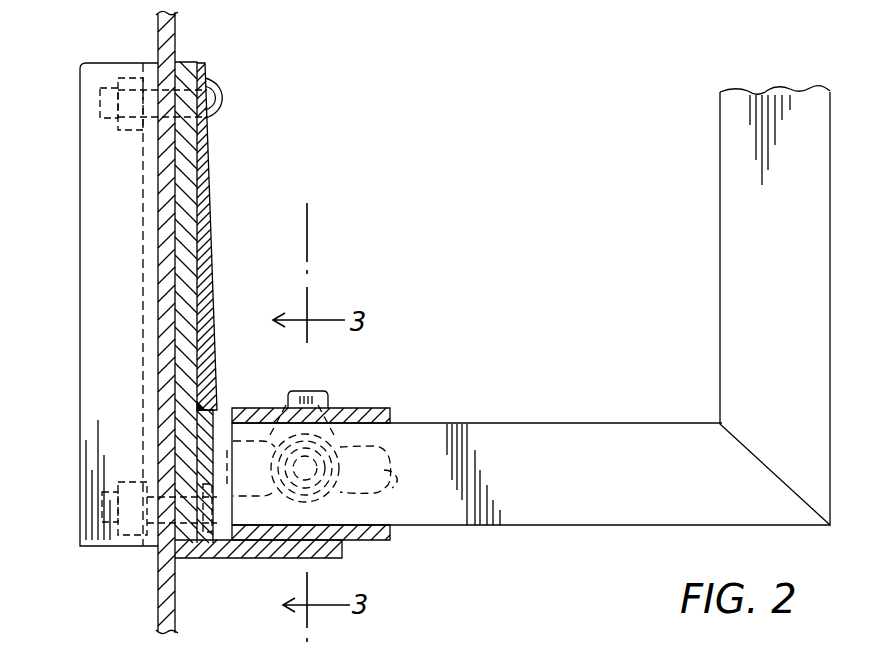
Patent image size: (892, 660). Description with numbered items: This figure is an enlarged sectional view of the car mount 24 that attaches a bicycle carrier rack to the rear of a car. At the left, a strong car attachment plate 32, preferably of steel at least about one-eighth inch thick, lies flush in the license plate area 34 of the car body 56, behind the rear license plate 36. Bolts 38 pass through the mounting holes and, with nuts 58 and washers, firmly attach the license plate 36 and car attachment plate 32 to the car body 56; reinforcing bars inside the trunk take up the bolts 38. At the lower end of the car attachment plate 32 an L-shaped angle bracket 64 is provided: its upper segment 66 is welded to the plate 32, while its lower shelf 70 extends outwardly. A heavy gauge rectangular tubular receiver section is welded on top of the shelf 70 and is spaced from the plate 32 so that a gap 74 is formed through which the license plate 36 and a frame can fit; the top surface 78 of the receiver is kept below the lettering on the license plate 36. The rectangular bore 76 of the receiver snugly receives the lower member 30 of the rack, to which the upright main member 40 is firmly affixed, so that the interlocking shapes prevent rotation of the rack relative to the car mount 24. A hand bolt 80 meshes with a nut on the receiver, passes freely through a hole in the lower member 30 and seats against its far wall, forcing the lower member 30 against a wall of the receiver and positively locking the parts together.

The car mount 24 is at (405, 410).
The lower member 30 is at (643, 488).
The car attachment plate 32 is at (188, 232).
The license plate area 34 is at (178, 611).
The rear license plate 36 is at (213, 288).
The bolts 38 is at (222, 97).
The main member 40 is at (743, 308).
The car body 56 is at (100, 297).
The nuts 58 is at (120, 60).
The L-shaped angle bracket 64 is at (299, 475).
The upper segment 66 is at (198, 408).
The lower shelf 70 is at (252, 547).
The gap 74 is at (258, 412).
The bore 76 is at (223, 417).
The top surface 78 is at (363, 412).
The hand bolt 80 is at (325, 463).